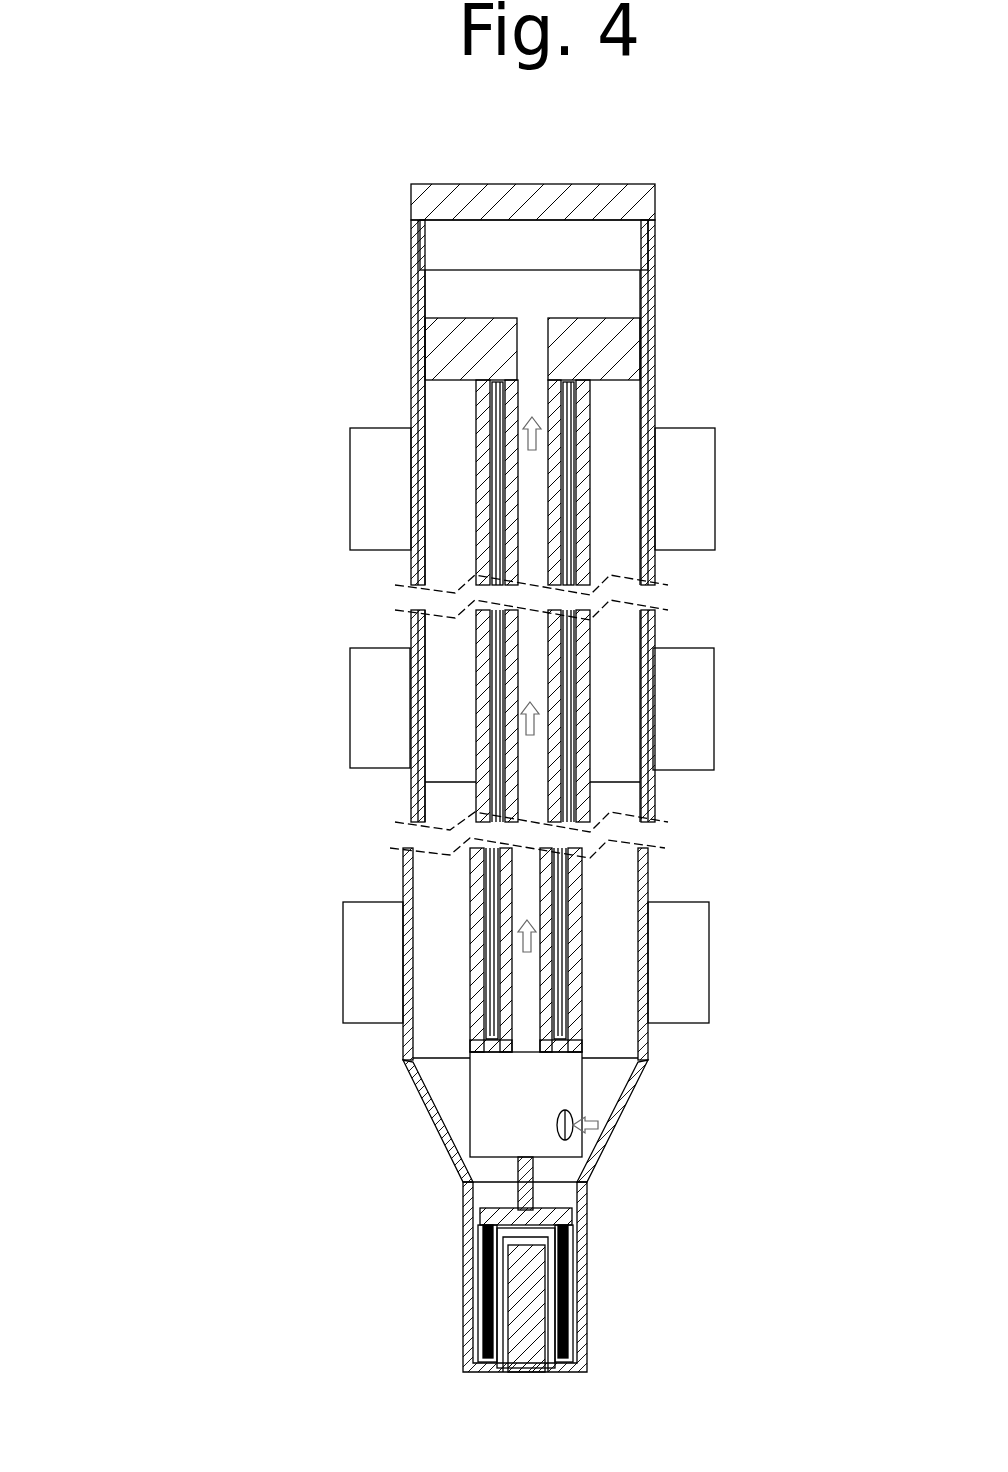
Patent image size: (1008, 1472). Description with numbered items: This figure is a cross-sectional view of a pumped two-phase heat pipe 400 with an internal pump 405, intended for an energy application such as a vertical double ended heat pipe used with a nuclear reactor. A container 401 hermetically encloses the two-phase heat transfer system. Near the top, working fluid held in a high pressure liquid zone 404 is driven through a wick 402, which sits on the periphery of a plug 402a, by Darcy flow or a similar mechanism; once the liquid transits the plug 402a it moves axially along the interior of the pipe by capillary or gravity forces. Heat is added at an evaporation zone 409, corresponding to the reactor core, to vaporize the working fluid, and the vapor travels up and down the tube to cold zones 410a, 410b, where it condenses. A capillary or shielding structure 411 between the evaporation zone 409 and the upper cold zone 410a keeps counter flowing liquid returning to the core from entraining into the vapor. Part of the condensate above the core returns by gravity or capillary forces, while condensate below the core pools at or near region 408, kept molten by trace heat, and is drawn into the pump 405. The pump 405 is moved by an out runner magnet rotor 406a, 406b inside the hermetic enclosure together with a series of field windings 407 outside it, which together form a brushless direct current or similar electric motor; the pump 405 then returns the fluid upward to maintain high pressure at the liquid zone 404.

The pumped two-phase heat pipe 400 is at (140, 211).
The container 401 is at (643, 188).
The wick 402 is at (397, 393).
The plug 402a is at (449, 322).
The high pressure liquid zone 404 is at (573, 258).
The internal pump 405 is at (574, 1096).
The out runner magnet rotor 406a is at (580, 1224).
The out runner magnet rotor 406b is at (467, 1239).
The field windings 407 is at (501, 1313).
The working fluid pooling region 408 is at (416, 1057).
The evaporation zone 409 is at (690, 718).
The cold zone 410a is at (687, 478).
The cold zone 410b is at (680, 973).
The capillary structure 411 is at (322, 548).